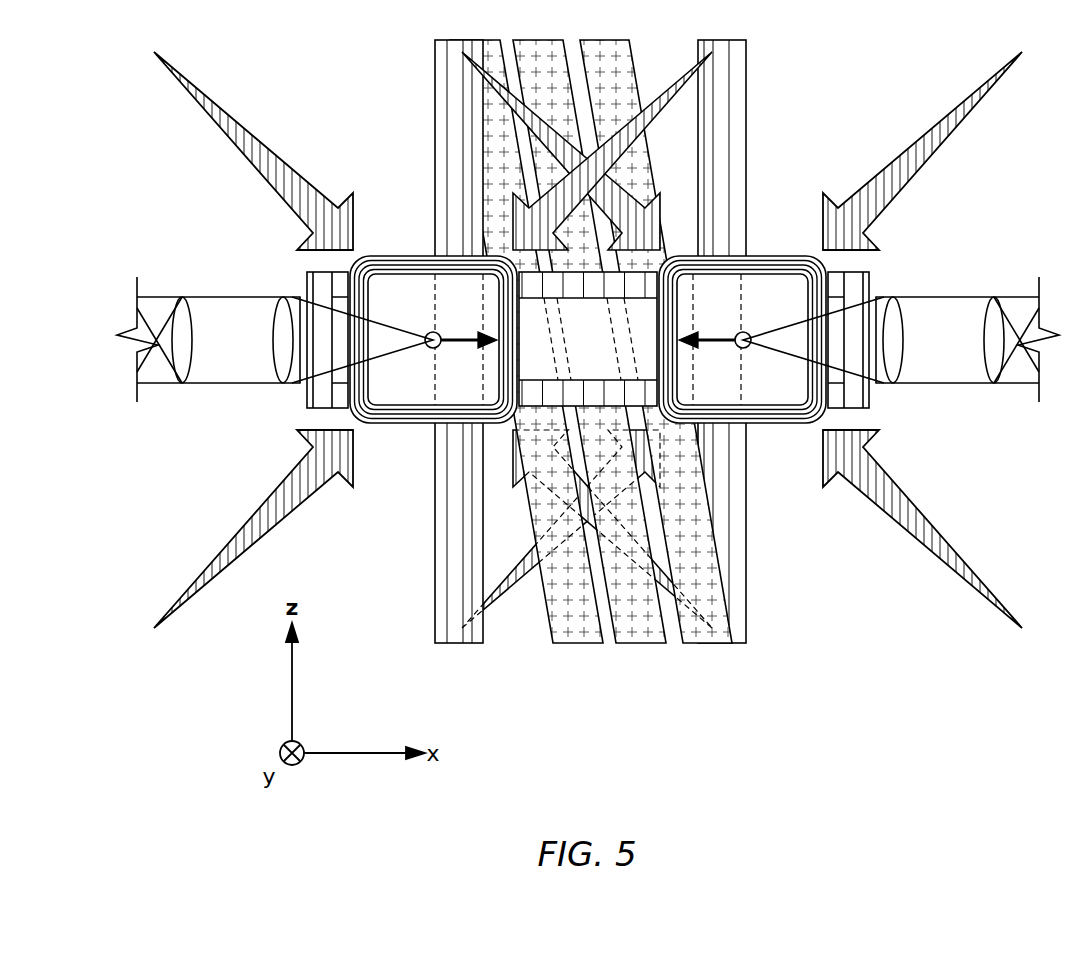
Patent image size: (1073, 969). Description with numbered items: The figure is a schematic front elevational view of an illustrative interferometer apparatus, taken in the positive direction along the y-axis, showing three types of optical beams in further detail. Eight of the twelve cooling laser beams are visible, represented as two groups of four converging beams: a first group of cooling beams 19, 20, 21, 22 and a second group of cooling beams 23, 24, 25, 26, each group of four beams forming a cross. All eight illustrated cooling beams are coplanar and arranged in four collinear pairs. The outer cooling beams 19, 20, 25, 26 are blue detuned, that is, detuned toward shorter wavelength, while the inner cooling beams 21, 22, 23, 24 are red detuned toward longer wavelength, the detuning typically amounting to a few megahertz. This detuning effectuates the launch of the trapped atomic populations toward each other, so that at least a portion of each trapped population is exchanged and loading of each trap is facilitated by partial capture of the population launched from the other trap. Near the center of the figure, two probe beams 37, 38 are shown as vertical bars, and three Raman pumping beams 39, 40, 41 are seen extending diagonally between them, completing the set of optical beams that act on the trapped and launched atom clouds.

The cooling beam 19 is at (241, 530).
The cooling beam 20 is at (241, 155).
The cooling beam 21 is at (632, 147).
The cooling beam 22 is at (665, 572).
The cooling beam 23 is at (528, 562).
The cooling beam 24 is at (530, 129).
The cooling beam 25 is at (935, 155).
The cooling beam 26 is at (935, 530).
The probe beam 37 is at (450, 645).
The probe beam 38 is at (748, 622).
The Raman pumping beam 39 is at (580, 645).
The Raman pumping beam 40 is at (642, 645).
The Raman pumping beam 41 is at (710, 645).